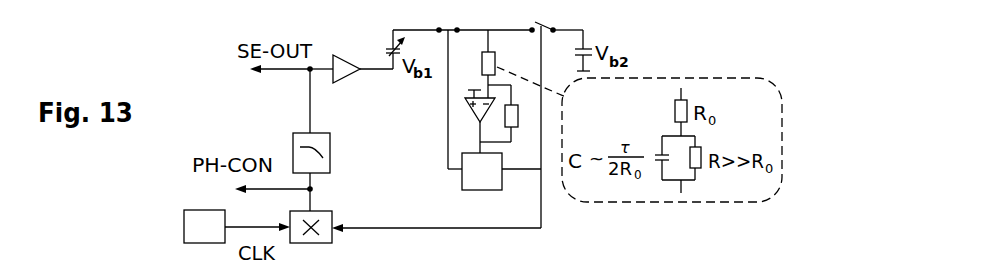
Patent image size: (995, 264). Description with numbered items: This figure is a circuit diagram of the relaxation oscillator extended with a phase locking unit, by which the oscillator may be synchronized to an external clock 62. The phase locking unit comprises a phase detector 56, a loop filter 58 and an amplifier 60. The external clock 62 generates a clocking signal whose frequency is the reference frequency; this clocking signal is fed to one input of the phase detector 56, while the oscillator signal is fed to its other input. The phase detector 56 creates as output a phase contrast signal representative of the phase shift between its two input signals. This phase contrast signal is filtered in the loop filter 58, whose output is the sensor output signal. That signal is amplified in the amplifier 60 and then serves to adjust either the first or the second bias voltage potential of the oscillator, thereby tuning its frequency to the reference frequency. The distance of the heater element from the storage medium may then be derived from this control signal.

The phase detector 56 is at (332, 223).
The loop filter 58 is at (330, 150).
The amplifier 60 is at (349, 56).
The external clock 62 is at (183, 226).